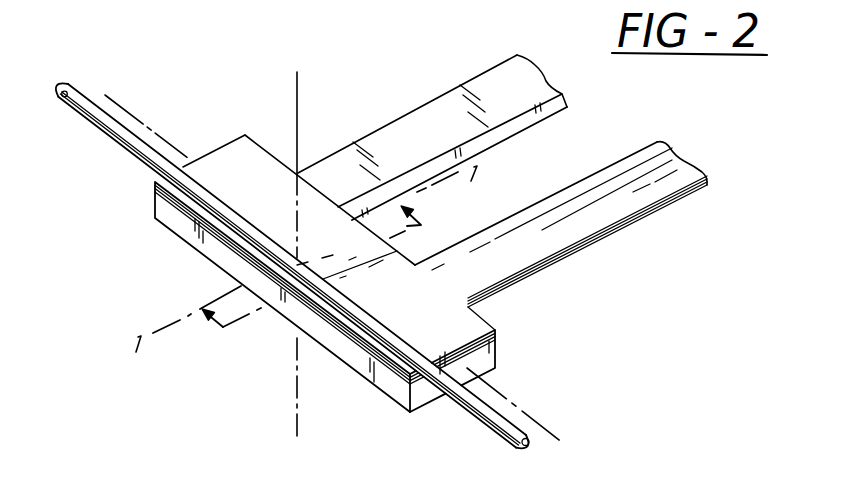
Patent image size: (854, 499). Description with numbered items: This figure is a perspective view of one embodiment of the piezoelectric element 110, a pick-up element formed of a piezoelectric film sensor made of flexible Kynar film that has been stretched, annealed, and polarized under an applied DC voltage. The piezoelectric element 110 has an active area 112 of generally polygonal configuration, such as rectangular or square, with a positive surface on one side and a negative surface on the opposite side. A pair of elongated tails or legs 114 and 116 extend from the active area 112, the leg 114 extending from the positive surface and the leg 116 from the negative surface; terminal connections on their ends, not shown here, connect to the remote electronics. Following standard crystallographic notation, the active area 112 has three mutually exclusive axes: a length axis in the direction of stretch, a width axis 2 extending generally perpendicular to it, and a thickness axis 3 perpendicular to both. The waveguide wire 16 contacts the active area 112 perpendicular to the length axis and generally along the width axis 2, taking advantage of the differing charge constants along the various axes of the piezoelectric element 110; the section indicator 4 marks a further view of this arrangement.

The piezoelectric element 110 is at (199, 84).
The active area 112 is at (467, 318).
The leg 114 is at (567, 232).
The leg 116 is at (431, 118).
The wire 16 is at (487, 420).
The width axis 2 is at (348, 262).
The thickness axis 3 is at (307, 250).
The section line 4- 4 is at (306, 265).